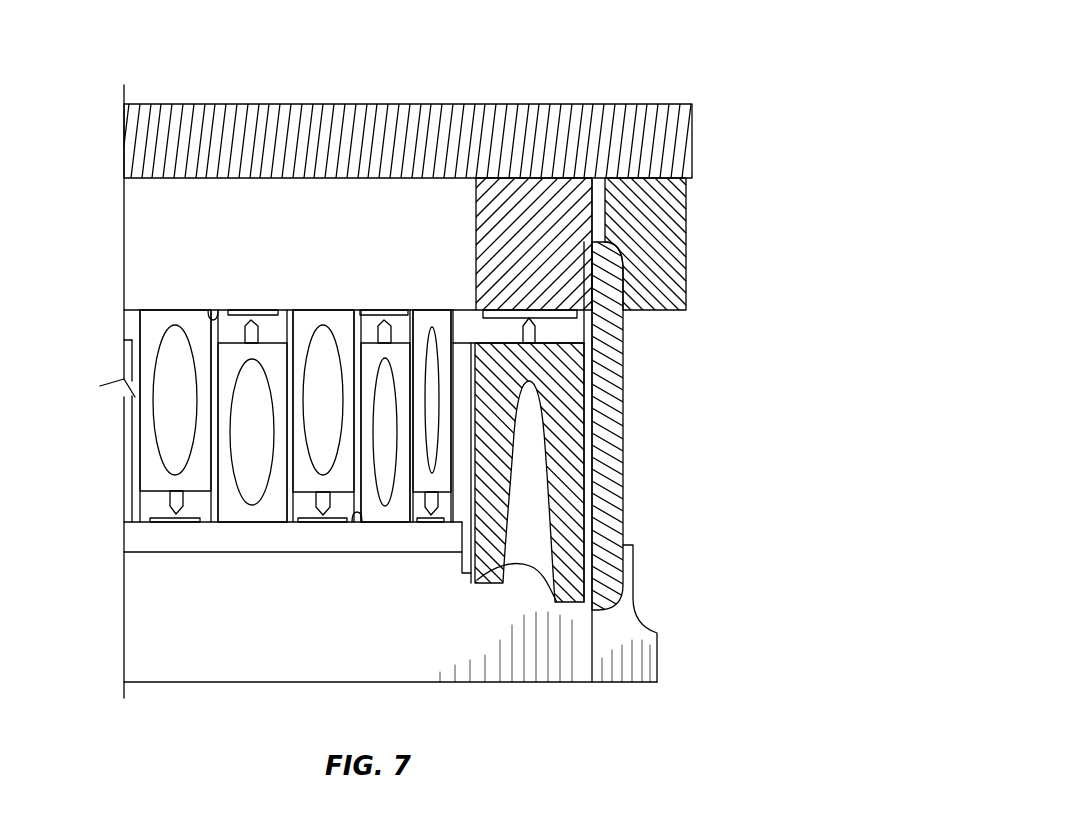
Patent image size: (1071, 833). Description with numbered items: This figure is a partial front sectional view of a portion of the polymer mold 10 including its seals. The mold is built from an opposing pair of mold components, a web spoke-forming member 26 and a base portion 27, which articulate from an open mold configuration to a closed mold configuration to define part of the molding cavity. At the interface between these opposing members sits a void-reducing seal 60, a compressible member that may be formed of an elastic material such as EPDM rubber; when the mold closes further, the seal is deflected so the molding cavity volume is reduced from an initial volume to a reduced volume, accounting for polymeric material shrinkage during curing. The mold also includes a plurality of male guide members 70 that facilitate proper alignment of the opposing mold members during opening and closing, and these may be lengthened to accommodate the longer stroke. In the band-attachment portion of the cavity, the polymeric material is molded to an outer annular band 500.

The polymer mold 10 is at (690, 52).
The web spoke-forming member 26 is at (165, 320).
The base portion 27 is at (213, 314).
The void-reducing seal 60 is at (255, 309).
The male guide member 70 is at (252, 325).
The outer annular band 500 is at (623, 428).